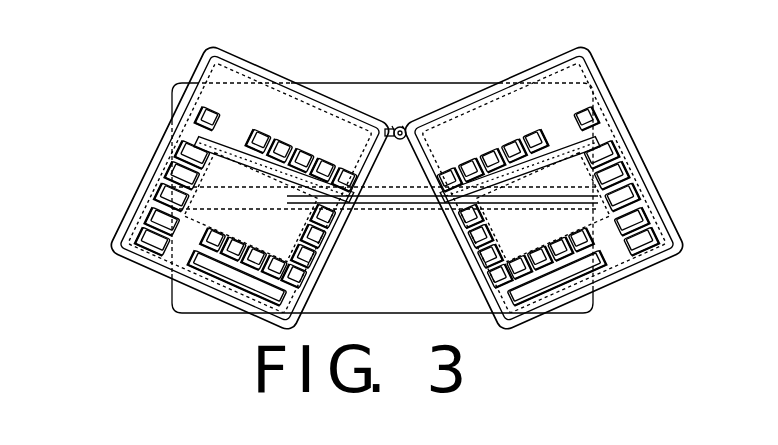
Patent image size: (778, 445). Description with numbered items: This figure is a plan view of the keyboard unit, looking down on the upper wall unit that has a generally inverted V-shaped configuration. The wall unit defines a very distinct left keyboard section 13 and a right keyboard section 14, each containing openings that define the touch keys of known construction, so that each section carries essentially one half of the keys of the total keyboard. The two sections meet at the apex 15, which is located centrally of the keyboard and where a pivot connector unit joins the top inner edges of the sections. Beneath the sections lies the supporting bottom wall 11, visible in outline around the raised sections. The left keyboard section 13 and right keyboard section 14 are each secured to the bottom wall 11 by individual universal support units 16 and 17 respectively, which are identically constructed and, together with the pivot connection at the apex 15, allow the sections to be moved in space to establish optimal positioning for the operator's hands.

The supporting bottom wall 11 is at (357, 74).
The left keyboard section 13 is at (340, 267).
The right keyboard section 14 is at (460, 281).
The apex 15 is at (399, 108).
The universal support unit 16 is at (252, 172).
The universal support unit 17 is at (533, 170).